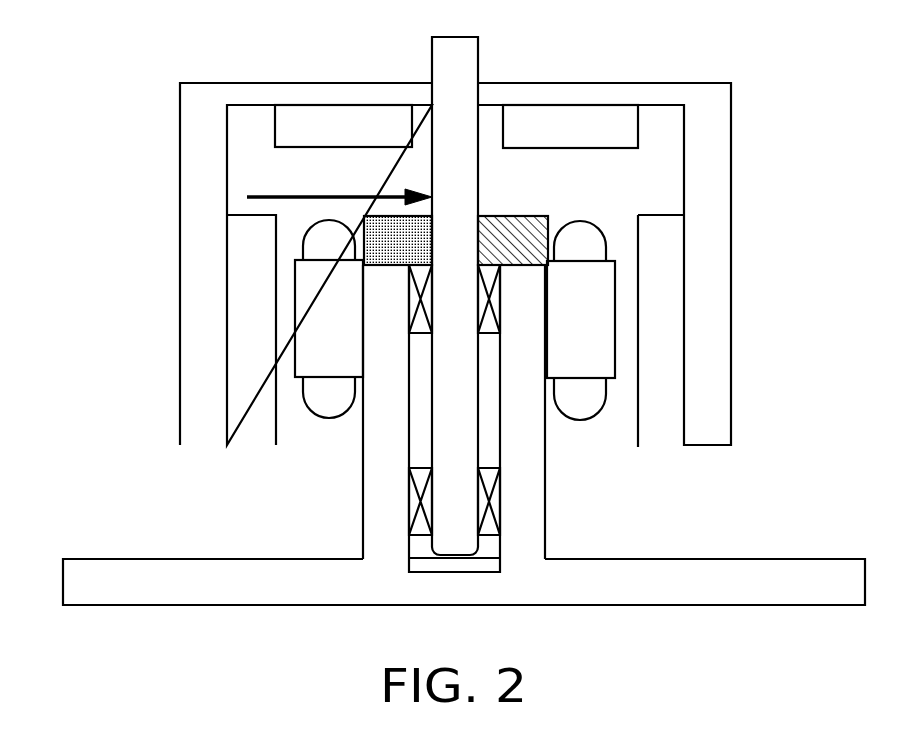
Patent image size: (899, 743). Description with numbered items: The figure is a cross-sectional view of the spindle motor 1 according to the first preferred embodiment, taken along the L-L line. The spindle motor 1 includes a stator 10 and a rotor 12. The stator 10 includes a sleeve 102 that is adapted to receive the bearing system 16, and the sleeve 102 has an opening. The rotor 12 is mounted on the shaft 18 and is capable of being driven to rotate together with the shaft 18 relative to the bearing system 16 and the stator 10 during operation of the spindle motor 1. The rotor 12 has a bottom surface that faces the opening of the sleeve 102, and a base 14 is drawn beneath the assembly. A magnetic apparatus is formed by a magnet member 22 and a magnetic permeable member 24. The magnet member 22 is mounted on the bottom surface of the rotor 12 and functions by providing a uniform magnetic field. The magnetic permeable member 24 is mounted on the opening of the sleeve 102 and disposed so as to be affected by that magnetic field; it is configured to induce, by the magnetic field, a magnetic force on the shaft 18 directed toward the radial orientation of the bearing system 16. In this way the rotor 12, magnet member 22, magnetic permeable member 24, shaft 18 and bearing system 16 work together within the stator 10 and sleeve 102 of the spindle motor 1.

The spindle motor 1 is at (763, 125).
The stator 10 is at (528, 358).
The sleeve 102 is at (502, 455).
The rotor 12 is at (180, 225).
The base 14 is at (130, 559).
The bearing system 16 is at (410, 464).
The shaft 18 is at (432, 73).
The magnet member 22 is at (632, 138).
The magnetic permeable member 24 is at (497, 215).